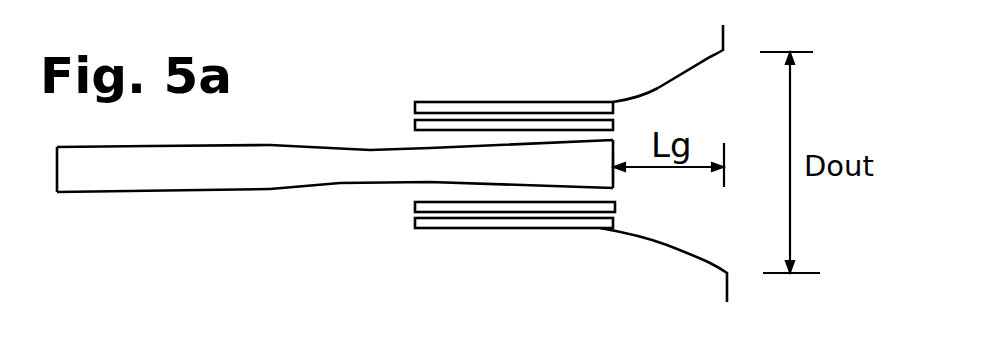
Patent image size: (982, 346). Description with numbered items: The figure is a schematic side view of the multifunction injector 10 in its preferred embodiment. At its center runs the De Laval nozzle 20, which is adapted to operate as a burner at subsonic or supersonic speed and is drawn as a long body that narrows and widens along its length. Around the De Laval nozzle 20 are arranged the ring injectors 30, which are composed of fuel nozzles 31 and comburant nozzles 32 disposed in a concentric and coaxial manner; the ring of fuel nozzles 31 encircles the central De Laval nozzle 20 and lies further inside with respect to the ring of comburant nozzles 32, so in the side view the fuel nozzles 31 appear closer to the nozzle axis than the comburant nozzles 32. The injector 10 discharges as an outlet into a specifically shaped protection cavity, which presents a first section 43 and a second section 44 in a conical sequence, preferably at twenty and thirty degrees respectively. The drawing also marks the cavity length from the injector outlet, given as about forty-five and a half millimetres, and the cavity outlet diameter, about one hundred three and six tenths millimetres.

The multifunction injector 10 is at (173, 229).
The De Laval nozzle 20 is at (366, 140).
The ring injectors 30 is at (502, 92).
The fuel nozzles 31 is at (448, 205).
The comburant nozzles 32 is at (572, 222).
The first section 43 is at (650, 87).
The second section 44 is at (707, 62).